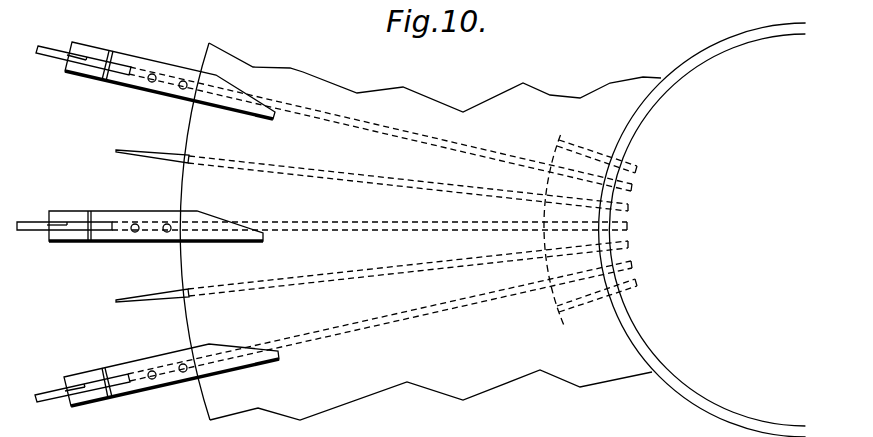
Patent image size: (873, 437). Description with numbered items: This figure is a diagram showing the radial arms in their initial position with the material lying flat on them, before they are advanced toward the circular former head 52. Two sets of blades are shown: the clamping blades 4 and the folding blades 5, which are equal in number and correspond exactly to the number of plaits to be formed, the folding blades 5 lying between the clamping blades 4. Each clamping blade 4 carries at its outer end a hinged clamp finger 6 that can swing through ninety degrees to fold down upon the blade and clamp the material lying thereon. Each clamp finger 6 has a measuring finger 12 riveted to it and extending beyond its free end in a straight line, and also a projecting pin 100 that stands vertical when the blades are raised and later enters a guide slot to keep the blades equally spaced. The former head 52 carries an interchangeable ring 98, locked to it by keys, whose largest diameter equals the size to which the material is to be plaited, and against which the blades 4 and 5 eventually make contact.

The clamping blade 4 is at (95, 63).
The folding blade 5 is at (115, 151).
The clamp finger 6 is at (110, 54).
The measuring finger 12 is at (145, 66).
The head 52 is at (702, 230).
The ring 98 is at (667, 388).
The projecting pin 100 is at (40, 55).